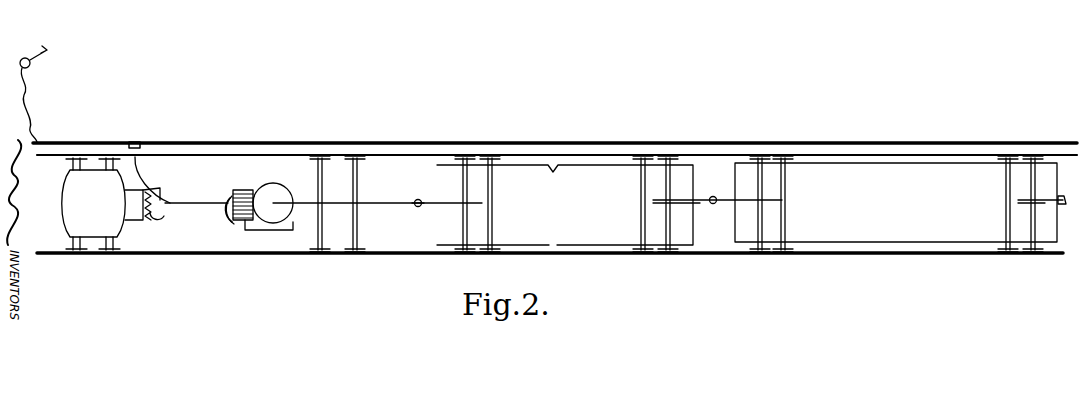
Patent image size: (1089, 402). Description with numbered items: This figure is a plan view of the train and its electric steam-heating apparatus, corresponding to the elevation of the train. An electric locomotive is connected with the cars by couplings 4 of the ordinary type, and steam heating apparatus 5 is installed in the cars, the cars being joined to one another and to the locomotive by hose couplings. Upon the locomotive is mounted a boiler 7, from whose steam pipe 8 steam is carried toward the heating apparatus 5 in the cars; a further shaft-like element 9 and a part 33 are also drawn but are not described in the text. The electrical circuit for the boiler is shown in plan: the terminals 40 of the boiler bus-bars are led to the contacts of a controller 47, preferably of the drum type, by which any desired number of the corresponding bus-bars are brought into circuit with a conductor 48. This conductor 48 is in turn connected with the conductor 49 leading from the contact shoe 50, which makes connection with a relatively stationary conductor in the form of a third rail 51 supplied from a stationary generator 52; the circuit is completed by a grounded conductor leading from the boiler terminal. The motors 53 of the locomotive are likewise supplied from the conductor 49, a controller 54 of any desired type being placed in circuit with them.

The couplings 4 is at (418, 200).
The steam heating apparatus 5 is at (884, 238).
The boiler 7 is at (286, 198).
The steam pipe 8 is at (275, 205).
The shaft section 9 is at (370, 203).
The clutch 33 is at (238, 218).
The terminals 40 is at (248, 192).
The controller 47 is at (238, 190).
The conductor 48 is at (195, 203).
The conductor 49 is at (157, 192).
The contact shoe 50 is at (132, 136).
The third rail 51 is at (555, 190).
The stationary generator 52 is at (34, 52).
The motors 53 is at (70, 209).
The controller 54 is at (160, 216).